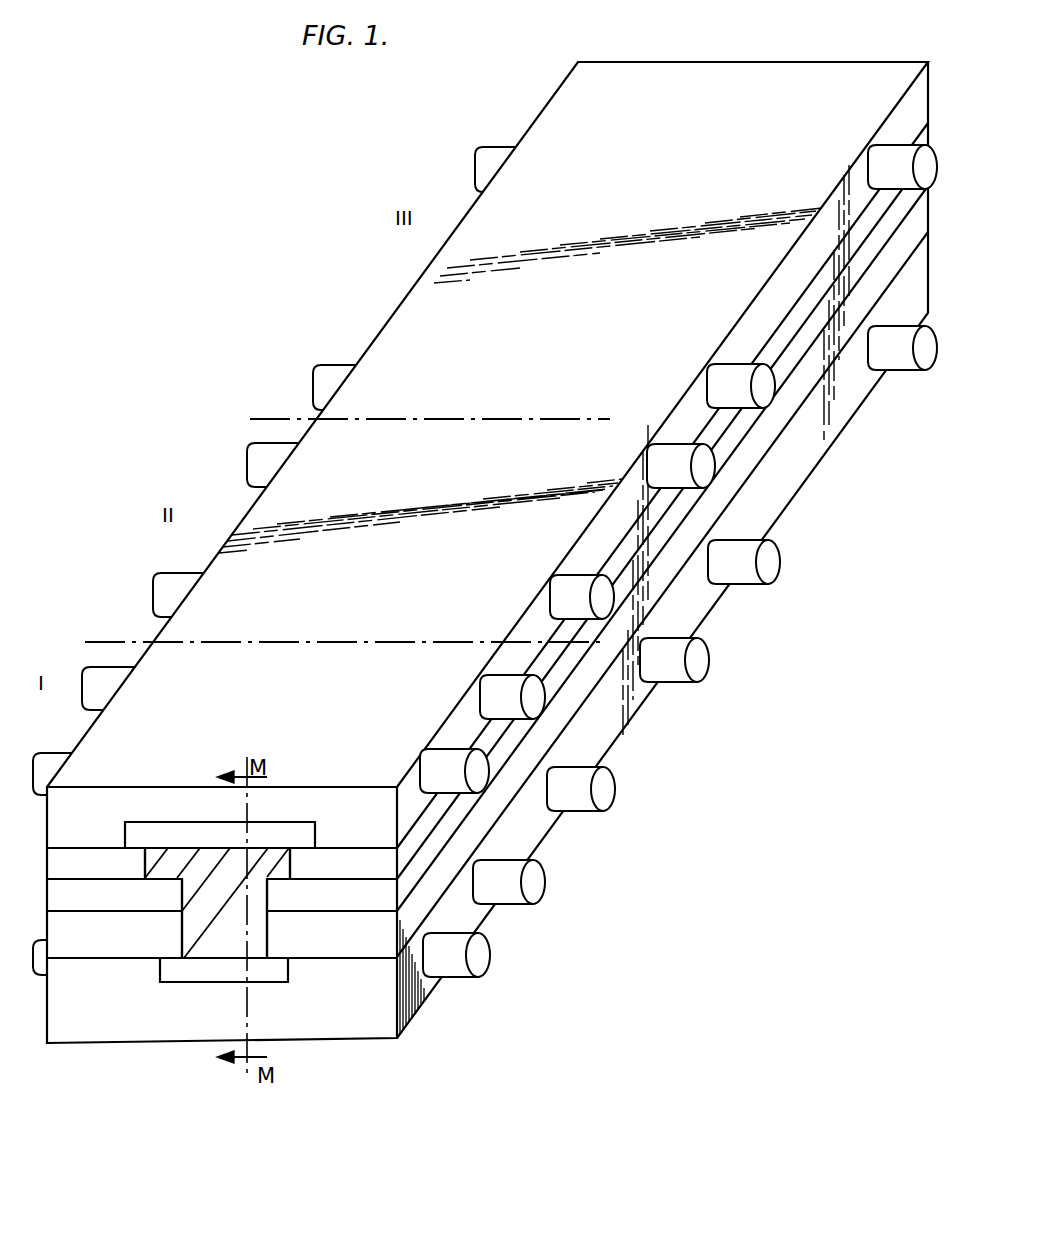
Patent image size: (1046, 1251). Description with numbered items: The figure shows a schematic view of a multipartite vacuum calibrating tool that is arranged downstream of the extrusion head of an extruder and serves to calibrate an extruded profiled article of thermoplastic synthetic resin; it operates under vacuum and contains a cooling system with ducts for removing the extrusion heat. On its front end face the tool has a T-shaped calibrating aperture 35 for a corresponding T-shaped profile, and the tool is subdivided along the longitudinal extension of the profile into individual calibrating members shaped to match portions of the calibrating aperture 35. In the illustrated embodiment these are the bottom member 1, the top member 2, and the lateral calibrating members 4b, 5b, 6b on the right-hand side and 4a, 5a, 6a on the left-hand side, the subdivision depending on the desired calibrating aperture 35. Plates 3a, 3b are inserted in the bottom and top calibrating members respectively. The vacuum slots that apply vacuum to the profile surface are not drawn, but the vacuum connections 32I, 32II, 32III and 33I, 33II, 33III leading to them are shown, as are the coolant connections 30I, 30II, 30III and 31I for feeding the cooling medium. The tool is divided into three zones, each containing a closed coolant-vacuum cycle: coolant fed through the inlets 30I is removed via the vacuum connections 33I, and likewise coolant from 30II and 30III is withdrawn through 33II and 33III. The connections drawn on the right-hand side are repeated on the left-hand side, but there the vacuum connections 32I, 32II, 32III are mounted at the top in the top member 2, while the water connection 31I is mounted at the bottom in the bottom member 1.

The bottom member 1 is at (365, 1027).
The top member 2 is at (210, 803).
The plate 3a is at (267, 970).
The plate 3b is at (297, 830).
The lateral calibrating member 4a is at (142, 950).
The lateral calibrating member 4b is at (425, 897).
The lateral calibrating member 5a is at (127, 903).
The lateral calibrating member 5b is at (400, 887).
The lateral calibrating member 6a is at (105, 865).
The lateral calibrating member 6b is at (405, 842).
The coolant connection 30I is at (440, 763).
The coolant connection 30II is at (572, 590).
The coolant connection 30III is at (731, 358).
The coolant connection 31I is at (43, 957).
The vacuum connection 32I is at (45, 765).
The vacuum connection 32II is at (167, 590).
The vacuum connection 32III is at (335, 378).
The vacuum connection 33I is at (463, 970).
The vacuum connection 33II is at (590, 790).
The vacuum connection 33III is at (753, 582).
The calibrating aperture 35 is at (217, 943).